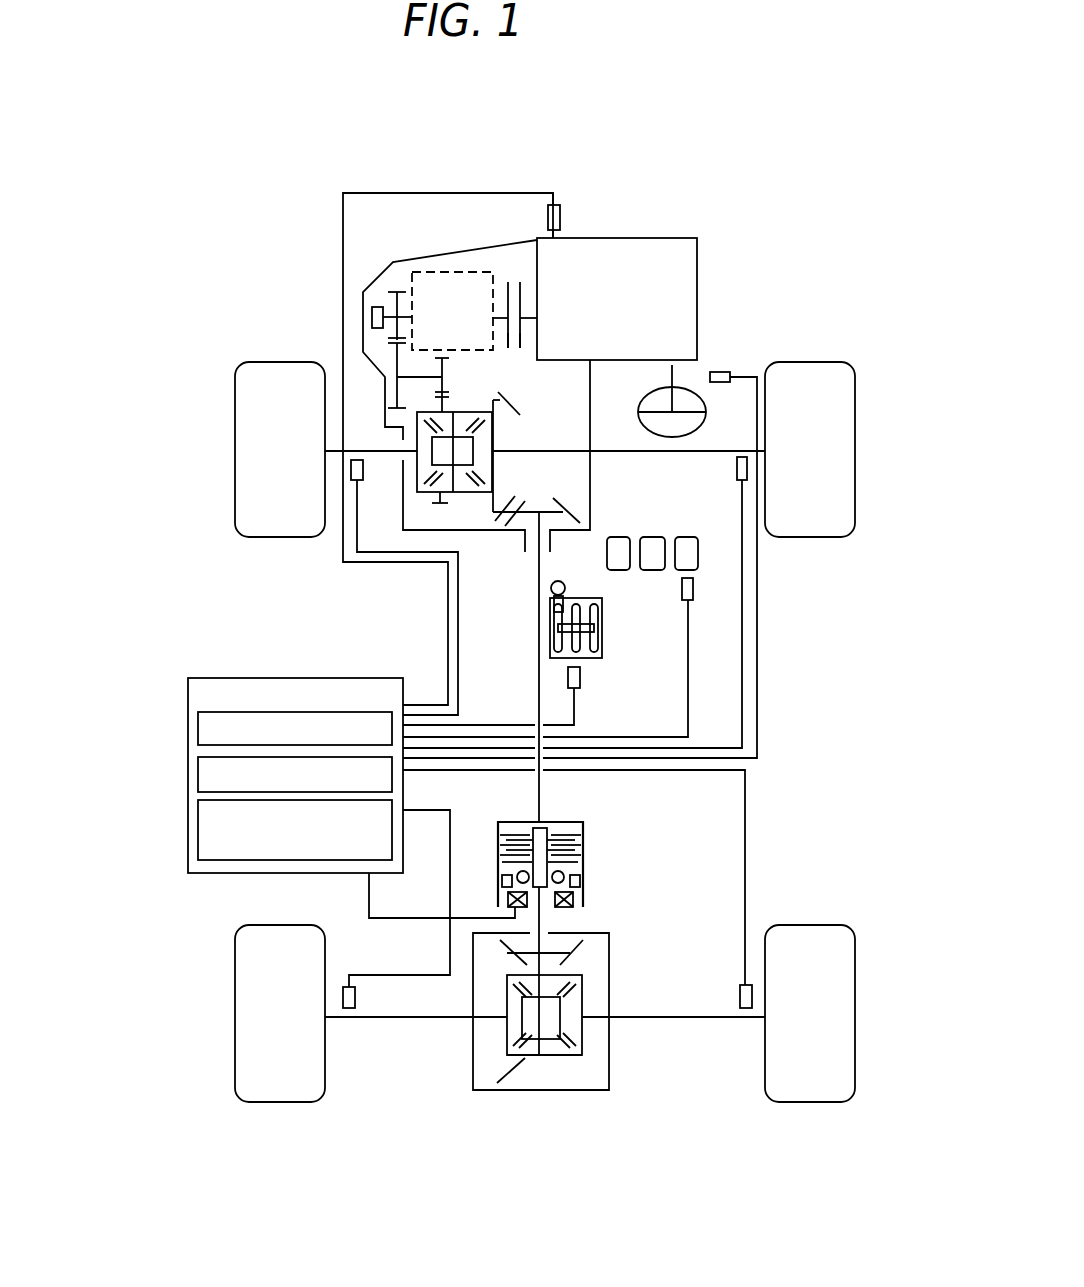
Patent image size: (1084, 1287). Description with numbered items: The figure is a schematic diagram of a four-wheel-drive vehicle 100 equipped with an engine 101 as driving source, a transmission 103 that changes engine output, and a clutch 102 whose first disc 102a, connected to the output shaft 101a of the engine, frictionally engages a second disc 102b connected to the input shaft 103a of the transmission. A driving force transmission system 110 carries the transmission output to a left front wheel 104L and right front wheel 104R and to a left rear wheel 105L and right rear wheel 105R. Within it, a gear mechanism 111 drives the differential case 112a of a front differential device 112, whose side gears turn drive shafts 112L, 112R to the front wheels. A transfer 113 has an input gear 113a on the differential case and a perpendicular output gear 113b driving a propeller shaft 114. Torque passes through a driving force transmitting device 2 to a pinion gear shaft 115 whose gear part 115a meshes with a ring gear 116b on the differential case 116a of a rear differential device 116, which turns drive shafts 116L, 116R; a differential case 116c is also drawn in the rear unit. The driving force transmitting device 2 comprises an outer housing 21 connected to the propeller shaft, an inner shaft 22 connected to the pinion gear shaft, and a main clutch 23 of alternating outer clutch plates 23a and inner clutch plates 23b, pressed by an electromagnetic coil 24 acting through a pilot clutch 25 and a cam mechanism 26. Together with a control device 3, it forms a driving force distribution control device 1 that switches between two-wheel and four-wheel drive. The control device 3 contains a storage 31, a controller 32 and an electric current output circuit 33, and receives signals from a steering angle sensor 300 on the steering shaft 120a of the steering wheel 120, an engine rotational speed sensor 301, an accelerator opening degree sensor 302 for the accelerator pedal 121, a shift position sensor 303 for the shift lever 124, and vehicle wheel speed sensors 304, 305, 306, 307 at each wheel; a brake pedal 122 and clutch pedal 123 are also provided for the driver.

The four-wheel-drive vehicle 100 is at (694, 125).
The driving force distribution control device 1 is at (257, 651).
The driving force transmitting device 2 is at (522, 822).
The control device 3 is at (266, 753).
The outer housing 21 is at (512, 822).
The inner shaft 22 is at (540, 857).
The main clutch 23 is at (549, 833).
The outer clutch plates 23a is at (523, 853).
The inner clutch plates 23b is at (517, 836).
The electromagnetic coil 24 is at (512, 900).
The pilot clutch 25 is at (589, 877).
The cam mechanism 26 is at (589, 860).
The storage 31 is at (198, 733).
The controller 32 is at (198, 785).
The electric current output circuit 33 is at (198, 828).
The engine 101 is at (656, 238).
The output shaft 101a is at (530, 316).
The clutch 102 is at (513, 277).
The first disc 102a is at (520, 347).
The second disc 102b is at (507, 333).
The transmission 103 is at (442, 270).
The input shaft 103a is at (502, 315).
The left front wheel 104L is at (279, 363).
The right front wheel 104R is at (811, 363).
The left rear wheel 105L is at (292, 1103).
The right rear wheel 105R is at (810, 1103).
The driving force transmission system 110 is at (367, 272).
The gear mechanism 111 is at (375, 338).
The front differential device 112 is at (467, 499).
The differential case 112a is at (427, 495).
The drive shaft 112L is at (377, 449).
The drive shaft 112R is at (711, 448).
The transfer 113 is at (559, 442).
The input gear 113a is at (519, 412).
The output gear 113b is at (568, 481).
The propeller shaft 114 is at (538, 650).
The pinion gear shaft 115 is at (543, 922).
The gear part 115a is at (578, 951).
The rear differential device 116 is at (598, 1048).
The differential case 116a is at (553, 1056).
The ring gear 116b is at (497, 950).
The differential case 116c is at (527, 1092).
The drive shaft 116L is at (378, 1022).
The drive shaft 116R is at (673, 1022).
The steering wheel 120 is at (692, 389).
The steering shaft 120a is at (678, 368).
The accelerator pedal 121 is at (688, 536).
The brake pedal 122 is at (652, 536).
The clutch pedal 123 is at (617, 536).
The shift lever 124 is at (560, 580).
The steering angle sensor 300 is at (732, 372).
The engine rotational speed sensor 301 is at (562, 216).
The accelerator opening degree sensor 302 is at (695, 589).
The shift position sensor 303 is at (581, 678).
The vehicle wheel speed sensor 304 is at (362, 481).
The vehicle wheel speed sensor 305 is at (735, 469).
The vehicle wheel speed sensor 306 is at (357, 997).
The vehicle wheel speed sensor 307 is at (738, 994).